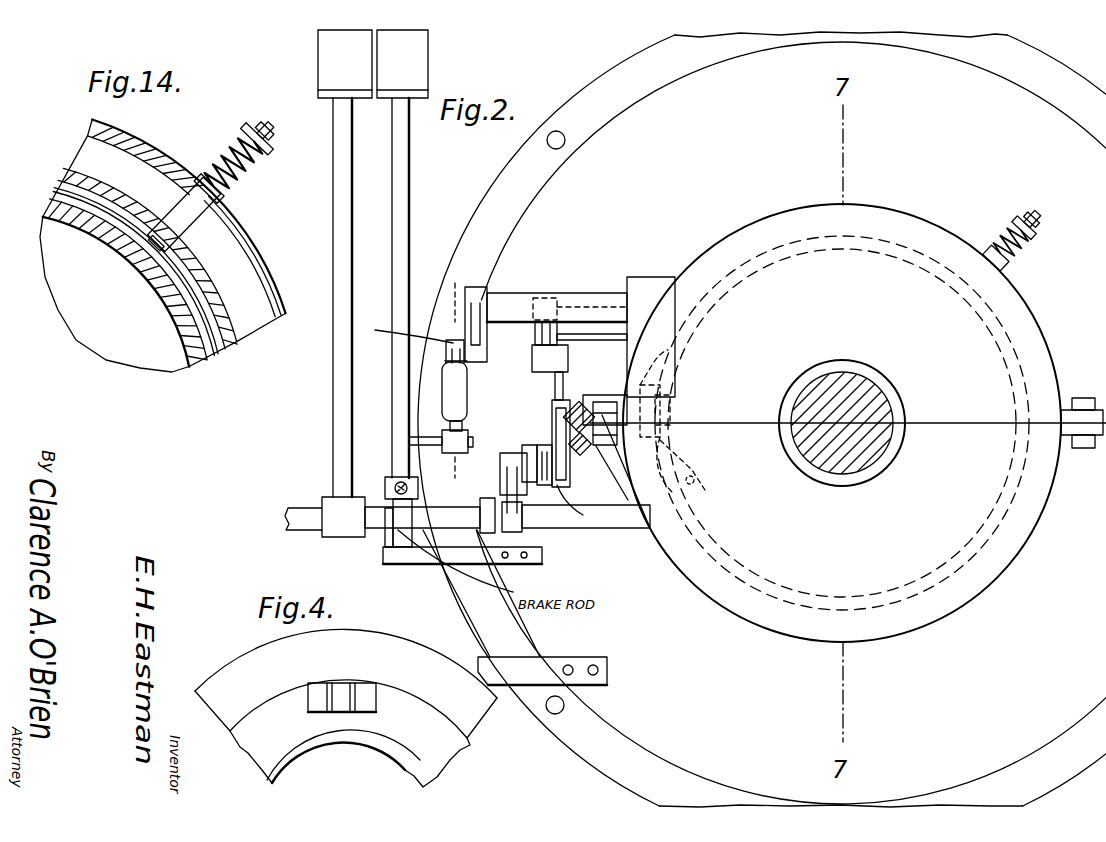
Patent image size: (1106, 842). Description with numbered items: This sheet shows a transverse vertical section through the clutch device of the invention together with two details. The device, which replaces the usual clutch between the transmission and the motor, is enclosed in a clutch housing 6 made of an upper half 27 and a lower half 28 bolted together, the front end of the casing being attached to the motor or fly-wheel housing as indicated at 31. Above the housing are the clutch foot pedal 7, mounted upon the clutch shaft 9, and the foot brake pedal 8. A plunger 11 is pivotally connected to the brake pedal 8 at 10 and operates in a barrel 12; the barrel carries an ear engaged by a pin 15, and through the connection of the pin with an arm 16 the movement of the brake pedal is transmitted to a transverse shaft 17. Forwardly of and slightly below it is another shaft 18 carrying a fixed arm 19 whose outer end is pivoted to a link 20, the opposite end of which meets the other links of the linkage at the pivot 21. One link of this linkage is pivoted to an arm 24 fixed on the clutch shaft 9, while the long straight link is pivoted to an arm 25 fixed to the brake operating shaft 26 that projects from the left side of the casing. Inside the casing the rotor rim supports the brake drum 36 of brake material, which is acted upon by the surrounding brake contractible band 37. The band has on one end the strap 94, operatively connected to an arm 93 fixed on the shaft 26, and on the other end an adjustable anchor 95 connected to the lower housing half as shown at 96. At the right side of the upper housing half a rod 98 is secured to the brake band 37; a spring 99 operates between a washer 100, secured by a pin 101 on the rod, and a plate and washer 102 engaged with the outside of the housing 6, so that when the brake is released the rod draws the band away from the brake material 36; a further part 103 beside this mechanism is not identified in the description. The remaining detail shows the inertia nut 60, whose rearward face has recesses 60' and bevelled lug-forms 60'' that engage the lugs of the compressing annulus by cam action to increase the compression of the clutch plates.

In FIG. 14, the clutch housing 6 is at (252, 240).
In FIG. 2, the clutch housing 6 is at (907, 206).
In FIG. 2, the clutch foot pedal 7 is at (333, 362).
In FIG. 2, the foot brake pedal 8 is at (392, 386).
In FIG. 2, the clutch shaft 9 is at (300, 508).
In FIG. 2, the pivotal connection 10 is at (470, 438).
In FIG. 2, the plunger 11 is at (464, 422).
In FIG. 2, the barrel 12 is at (464, 384).
In FIG. 2, the pin 15 is at (412, 384).
In FIG. 2, the arm 16 is at (484, 327).
In FIG. 2, the transverse shaft 17 is at (539, 293).
In FIG. 2, the shaft 18 is at (595, 332).
In FIG. 2, the arm 19 is at (545, 372).
In FIG. 2, the link 20 is at (563, 381).
In FIG. 2, the pivot 21 is at (540, 445).
In FIG. 2, the arm 24 is at (507, 485).
In FIG. 2, the arm 25 is at (581, 508).
In FIG. 2, the brake operating shaft 26 is at (555, 425).
In FIG. 2, the upper half of casing 27 is at (1050, 350).
In FIG. 2, the lower half of casing 28 is at (1055, 500).
In FIG. 2, the attachment to motor or fly-wheel housing 31 is at (550, 714).
In FIG. 14, the brake drum 36 is at (125, 283).
In FIG. 14, the brake contractible band 37 is at (215, 306).
In FIG. 4, the inertia nut 60 is at (346, 707).
In FIG. 4, the recesses 60' is at (366, 687).
In FIG. 4, the lug-forms 60'' is at (341, 680).
In FIG. 2, the arm 93 is at (662, 410).
In FIG. 2, the strap 94 is at (645, 392).
In FIG. 2, the adjustable anchor 95 is at (675, 465).
In FIG. 2, the anchor connection 96 is at (608, 466).
In FIG. 14, the rod 98 is at (278, 146).
In FIG. 2, the rod 98 is at (1040, 228).
In FIG. 14, the spring 99 is at (238, 138).
In FIG. 2, the spring 99 is at (1030, 252).
In FIG. 14, the washer 100 is at (260, 126).
In FIG. 2, the washer 100 is at (1042, 240).
In FIG. 14, the pin 101 is at (272, 134).
In FIG. 14, the plate and washer 102 is at (232, 214).
In FIG. 14, the collar 103 is at (230, 206).